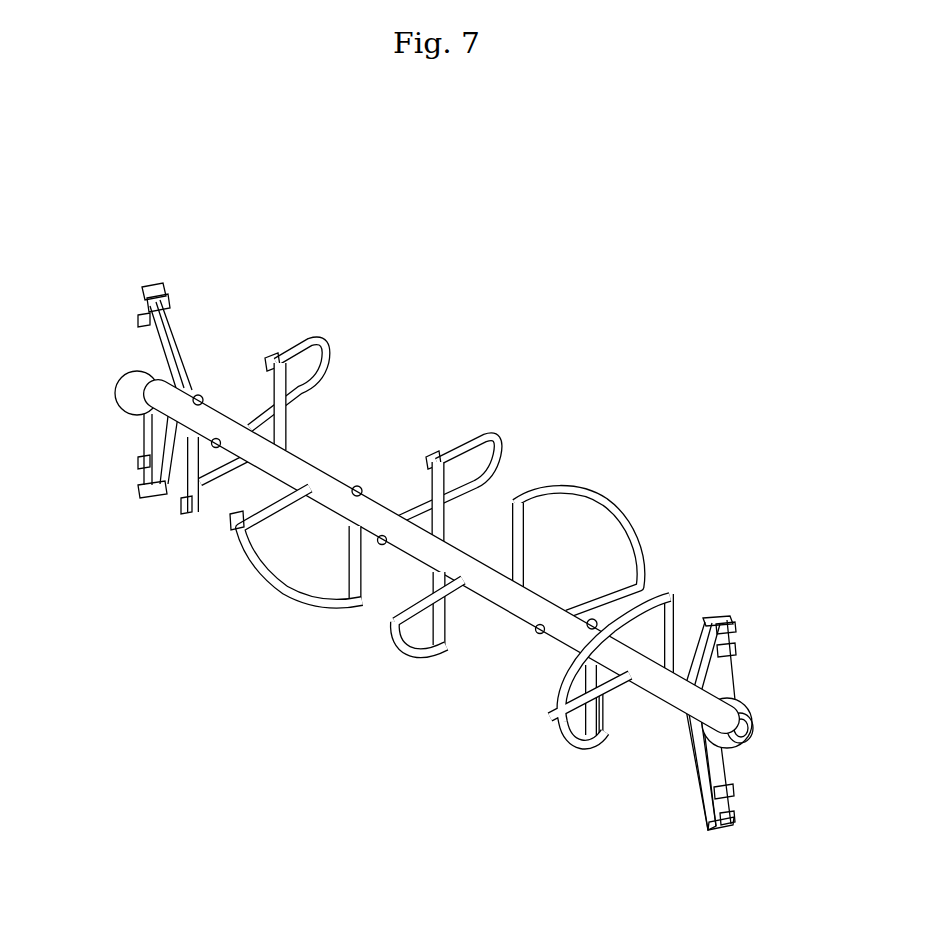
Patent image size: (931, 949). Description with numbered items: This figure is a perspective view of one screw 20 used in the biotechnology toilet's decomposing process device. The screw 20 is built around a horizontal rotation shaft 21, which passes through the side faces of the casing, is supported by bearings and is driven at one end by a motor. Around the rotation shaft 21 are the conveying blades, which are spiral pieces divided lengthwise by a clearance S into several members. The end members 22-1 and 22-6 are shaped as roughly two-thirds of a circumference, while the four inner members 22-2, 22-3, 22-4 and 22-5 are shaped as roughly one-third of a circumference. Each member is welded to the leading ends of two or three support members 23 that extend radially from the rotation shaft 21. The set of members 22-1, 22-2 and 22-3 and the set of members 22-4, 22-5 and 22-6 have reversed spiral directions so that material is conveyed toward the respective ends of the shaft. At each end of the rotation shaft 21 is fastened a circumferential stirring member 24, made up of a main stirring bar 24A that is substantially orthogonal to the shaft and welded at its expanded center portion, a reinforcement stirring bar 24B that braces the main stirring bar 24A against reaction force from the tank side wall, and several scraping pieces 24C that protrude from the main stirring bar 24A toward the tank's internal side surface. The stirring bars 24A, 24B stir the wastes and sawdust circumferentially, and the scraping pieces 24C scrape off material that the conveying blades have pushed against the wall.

The screw 20 is at (604, 412).
The rotation shaft 21 is at (490, 592).
The end member 22-1 is at (563, 737).
The member 22-2 is at (617, 513).
The member 22-3 is at (410, 650).
The member 22-4 is at (472, 433).
The member 22-5 is at (265, 573).
The end member 22-6 is at (300, 343).
The support member 23 is at (686, 615).
The circumferential stirring member 24 is at (137, 443).
The main stirring bar 24A is at (720, 667).
The reinforcement stirring bar 24B is at (693, 767).
The scraping piece 24C is at (727, 618).
The clearance S is at (224, 506).